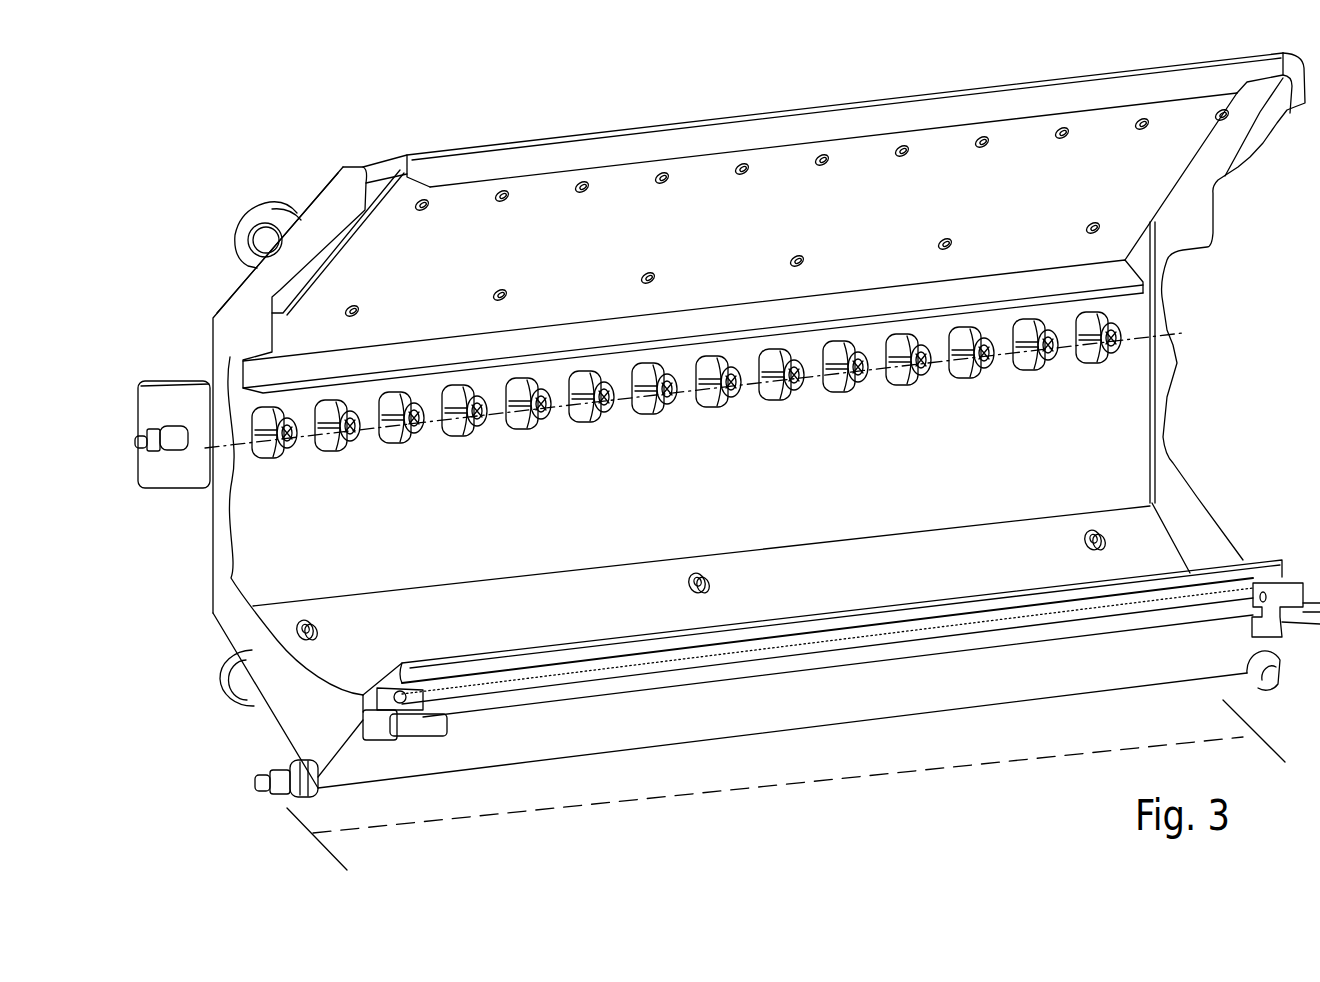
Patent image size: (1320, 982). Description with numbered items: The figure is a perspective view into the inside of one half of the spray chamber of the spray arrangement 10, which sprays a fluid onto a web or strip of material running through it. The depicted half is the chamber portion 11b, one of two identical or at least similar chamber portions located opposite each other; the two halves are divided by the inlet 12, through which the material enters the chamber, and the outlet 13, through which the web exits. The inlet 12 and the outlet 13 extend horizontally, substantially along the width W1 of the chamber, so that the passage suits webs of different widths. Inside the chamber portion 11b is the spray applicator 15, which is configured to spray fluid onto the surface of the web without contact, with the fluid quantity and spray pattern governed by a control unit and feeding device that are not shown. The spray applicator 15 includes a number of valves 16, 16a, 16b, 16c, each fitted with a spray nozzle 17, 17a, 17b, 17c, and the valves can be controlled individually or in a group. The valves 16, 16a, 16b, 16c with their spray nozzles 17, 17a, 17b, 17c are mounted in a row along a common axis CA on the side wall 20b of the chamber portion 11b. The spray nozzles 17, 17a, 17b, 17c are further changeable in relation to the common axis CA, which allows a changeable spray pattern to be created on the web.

The spray arrangement 10 is at (317, 197).
The chamber portion 11b is at (375, 160).
The outlet 13 is at (470, 170).
The spray applicator 15 is at (188, 370).
The valve 16 is at (283, 415).
The valve 16a is at (347, 410).
The valve 16b is at (413, 405).
The valve 16c is at (475, 398).
The spray nozzle 17 is at (293, 440).
The spray nozzle 17a is at (357, 432).
The spray nozzle 17b is at (420, 425).
The spray nozzle 17c is at (483, 418).
The side wall 20b is at (675, 494).
The common axis CA is at (820, 383).
The inlet 12 is at (518, 658).
The width of the chamber W1 is at (786, 785).